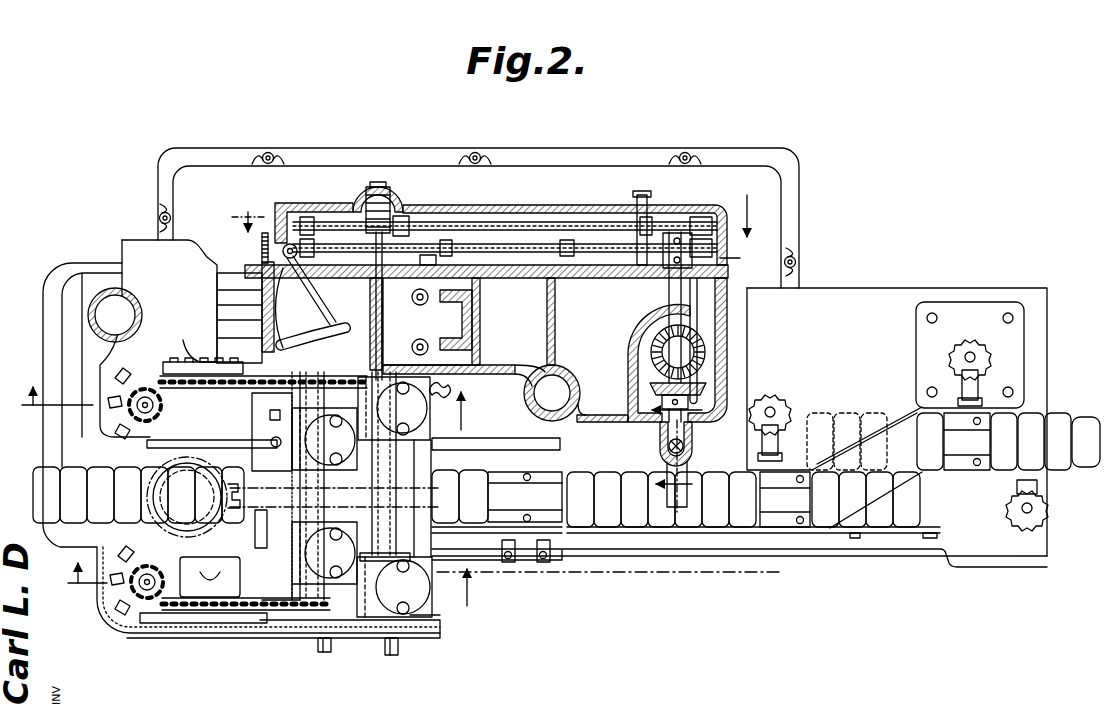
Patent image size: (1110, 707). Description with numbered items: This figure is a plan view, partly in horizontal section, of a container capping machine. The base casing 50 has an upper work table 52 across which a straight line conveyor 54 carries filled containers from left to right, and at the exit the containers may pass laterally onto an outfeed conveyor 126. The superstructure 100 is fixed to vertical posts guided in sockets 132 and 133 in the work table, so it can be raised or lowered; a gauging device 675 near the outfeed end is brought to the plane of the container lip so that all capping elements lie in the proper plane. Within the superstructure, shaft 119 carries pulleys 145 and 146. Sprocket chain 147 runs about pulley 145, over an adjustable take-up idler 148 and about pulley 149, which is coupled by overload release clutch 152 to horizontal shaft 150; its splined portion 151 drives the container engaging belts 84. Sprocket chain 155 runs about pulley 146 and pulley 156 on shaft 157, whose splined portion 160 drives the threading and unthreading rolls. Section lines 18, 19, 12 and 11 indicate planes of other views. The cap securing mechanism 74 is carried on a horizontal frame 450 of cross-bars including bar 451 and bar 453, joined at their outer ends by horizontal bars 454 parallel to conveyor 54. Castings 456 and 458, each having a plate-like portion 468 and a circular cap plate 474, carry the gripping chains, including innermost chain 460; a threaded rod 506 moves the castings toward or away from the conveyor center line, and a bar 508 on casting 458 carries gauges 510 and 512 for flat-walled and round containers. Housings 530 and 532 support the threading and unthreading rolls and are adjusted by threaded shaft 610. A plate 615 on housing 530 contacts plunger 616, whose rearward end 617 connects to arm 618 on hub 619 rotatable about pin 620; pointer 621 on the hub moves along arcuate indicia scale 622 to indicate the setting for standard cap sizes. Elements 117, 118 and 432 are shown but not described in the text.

The socket 132 is at (108, 300).
The horizontal forwardly extending shaft 157 is at (283, 228).
The pulley 156 is at (302, 233).
The overload release clutch 152 is at (360, 205).
The pulley 149 is at (400, 243).
The sprocket chain 155 is at (527, 222).
The sprocket chain 147 is at (563, 245).
The pulley 146 is at (700, 222).
The pulley 145 is at (749, 261).
The section line 18 is at (498, 220).
The rearward end of plunger 617 is at (262, 250).
The arm 618 is at (268, 262).
The hub 619 is at (275, 282).
The pin 620 is at (275, 300).
The pointer 621 is at (275, 318).
The plunger 616 is at (268, 356).
The arcuate indicia scale 622 is at (292, 308).
The plate 615 is at (312, 338).
The plate-like portion 468 is at (234, 368).
The housing 530 is at (290, 424).
The horizontal shaft 150 is at (426, 312).
The adjustable take-up idler 148 is at (613, 260).
The shaft 119 is at (672, 324).
The socket 133 is at (561, 378).
The superstructure 100 is at (626, 383).
The gear 117 is at (705, 352).
The bevel gear 118 is at (702, 379).
The section line 19 is at (684, 450).
The outfeed conveyor 126 is at (864, 426).
The gauging device 675 is at (691, 477).
The circular cap plate 474 is at (440, 393).
The section line 12 is at (250, 415).
The carriage block 432 is at (394, 466).
The casting 456 is at (440, 429).
The horizontal frame 450 is at (437, 457).
The bar 451 is at (324, 486).
The splined portion 151 is at (324, 553).
The innermost container gripping chain 460 is at (155, 481).
The splined portion 160 is at (305, 500).
The bar 453 is at (420, 527).
The gauge 512 is at (492, 540).
The gauge 510 is at (551, 548).
The bar 508 is at (527, 560).
The straight line conveyor 54 is at (624, 510).
The work table 52 is at (638, 541).
The base casing 50 is at (690, 562).
The section line 11 is at (277, 595).
The casting 458 is at (437, 612).
The horizontal bars 454 is at (416, 640).
The threaded rod 506 is at (394, 650).
The threaded shaft 610 is at (331, 647).
The cap securing mechanism 74 is at (294, 582).
The housing 532 is at (297, 584).
The container engaging belts 84 is at (195, 630).